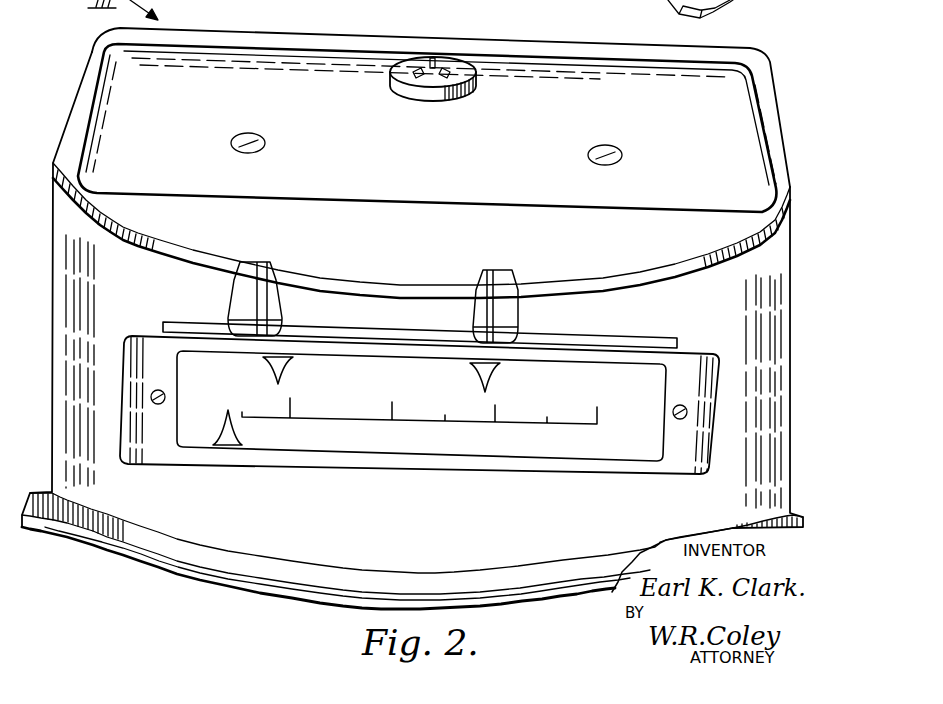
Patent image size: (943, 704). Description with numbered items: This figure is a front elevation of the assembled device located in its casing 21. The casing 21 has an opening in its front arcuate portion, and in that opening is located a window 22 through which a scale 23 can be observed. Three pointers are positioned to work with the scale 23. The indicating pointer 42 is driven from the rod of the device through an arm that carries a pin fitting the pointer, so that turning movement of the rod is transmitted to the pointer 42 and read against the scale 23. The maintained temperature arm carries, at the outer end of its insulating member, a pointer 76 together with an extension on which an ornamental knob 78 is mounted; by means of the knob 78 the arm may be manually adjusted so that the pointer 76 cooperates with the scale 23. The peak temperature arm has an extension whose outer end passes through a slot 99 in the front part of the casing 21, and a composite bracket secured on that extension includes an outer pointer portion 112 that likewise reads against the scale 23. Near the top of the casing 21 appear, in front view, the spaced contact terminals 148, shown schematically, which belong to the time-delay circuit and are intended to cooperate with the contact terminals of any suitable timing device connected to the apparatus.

The casing 21 is at (790, 273).
The window 22 is at (650, 378).
The scale 23 is at (370, 440).
The indicating pointer 42 is at (228, 437).
The pointer 76 is at (290, 362).
The ornamental knob 78 is at (240, 289).
The slot 99 is at (588, 337).
The outer pointer portion 112 is at (505, 365).
The contacts 148 is at (434, 58).